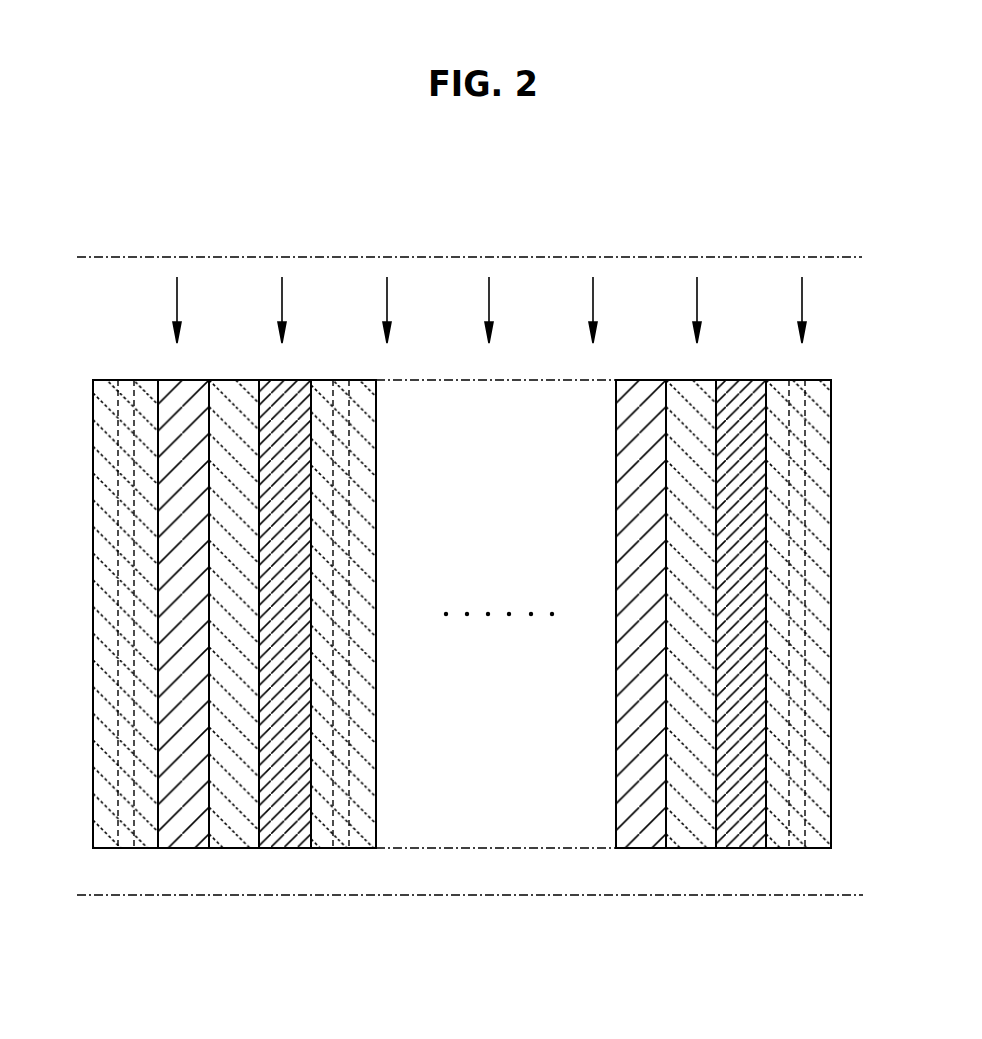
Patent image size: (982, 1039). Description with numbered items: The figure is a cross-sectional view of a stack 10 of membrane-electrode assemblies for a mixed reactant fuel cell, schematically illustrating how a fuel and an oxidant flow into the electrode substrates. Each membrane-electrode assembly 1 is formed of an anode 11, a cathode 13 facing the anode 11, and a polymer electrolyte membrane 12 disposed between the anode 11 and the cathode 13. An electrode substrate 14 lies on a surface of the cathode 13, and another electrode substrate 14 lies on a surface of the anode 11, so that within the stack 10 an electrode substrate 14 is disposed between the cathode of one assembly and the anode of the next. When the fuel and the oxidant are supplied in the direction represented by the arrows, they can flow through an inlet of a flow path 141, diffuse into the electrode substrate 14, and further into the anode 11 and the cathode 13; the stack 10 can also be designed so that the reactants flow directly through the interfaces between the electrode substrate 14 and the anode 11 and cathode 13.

The membrane-electrode assembly 1 is at (469, 693).
The stack 10 is at (481, 229).
The anode 11 is at (185, 840).
The polymer electrolyte membrane 12 is at (238, 840).
The cathode 13 is at (512, 666).
The electrode substrate 14 is at (105, 840).
The flow path 141 is at (124, 840).